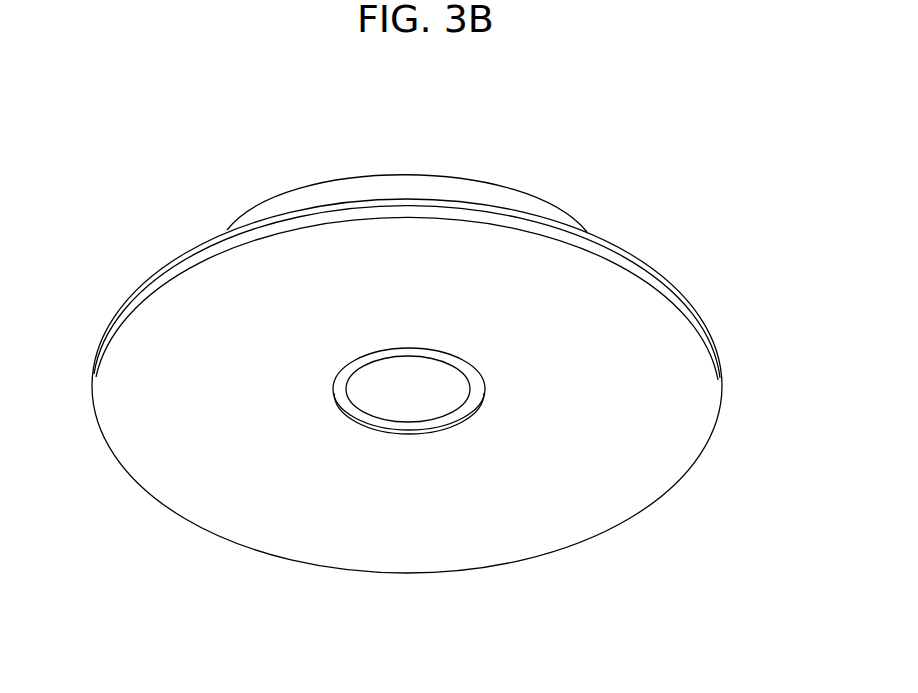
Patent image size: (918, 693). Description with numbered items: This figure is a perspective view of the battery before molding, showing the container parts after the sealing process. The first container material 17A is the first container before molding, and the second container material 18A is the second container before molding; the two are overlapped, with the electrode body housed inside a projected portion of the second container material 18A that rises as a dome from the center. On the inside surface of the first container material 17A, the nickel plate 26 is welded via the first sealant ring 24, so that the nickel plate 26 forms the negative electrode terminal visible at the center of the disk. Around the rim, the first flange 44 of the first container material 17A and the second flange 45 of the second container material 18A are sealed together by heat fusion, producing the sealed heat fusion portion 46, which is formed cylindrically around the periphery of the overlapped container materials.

The first container material 17A is at (613, 488).
The second container material 18A is at (497, 189).
The first sealant ring 24 is at (342, 400).
The nickel plate 26 is at (423, 403).
The first flange 44 is at (790, 202).
The second flange 45 is at (645, 260).
The heat fusion portion 46 is at (463, 301).